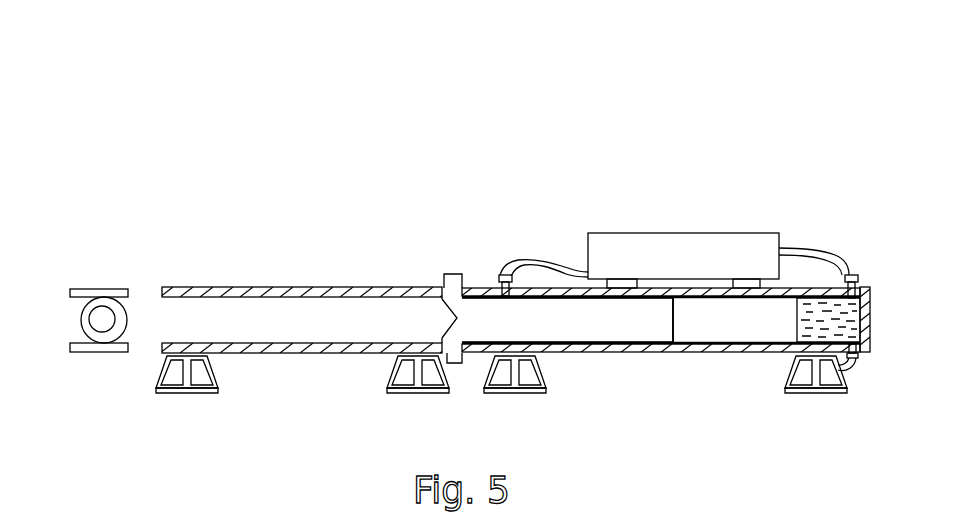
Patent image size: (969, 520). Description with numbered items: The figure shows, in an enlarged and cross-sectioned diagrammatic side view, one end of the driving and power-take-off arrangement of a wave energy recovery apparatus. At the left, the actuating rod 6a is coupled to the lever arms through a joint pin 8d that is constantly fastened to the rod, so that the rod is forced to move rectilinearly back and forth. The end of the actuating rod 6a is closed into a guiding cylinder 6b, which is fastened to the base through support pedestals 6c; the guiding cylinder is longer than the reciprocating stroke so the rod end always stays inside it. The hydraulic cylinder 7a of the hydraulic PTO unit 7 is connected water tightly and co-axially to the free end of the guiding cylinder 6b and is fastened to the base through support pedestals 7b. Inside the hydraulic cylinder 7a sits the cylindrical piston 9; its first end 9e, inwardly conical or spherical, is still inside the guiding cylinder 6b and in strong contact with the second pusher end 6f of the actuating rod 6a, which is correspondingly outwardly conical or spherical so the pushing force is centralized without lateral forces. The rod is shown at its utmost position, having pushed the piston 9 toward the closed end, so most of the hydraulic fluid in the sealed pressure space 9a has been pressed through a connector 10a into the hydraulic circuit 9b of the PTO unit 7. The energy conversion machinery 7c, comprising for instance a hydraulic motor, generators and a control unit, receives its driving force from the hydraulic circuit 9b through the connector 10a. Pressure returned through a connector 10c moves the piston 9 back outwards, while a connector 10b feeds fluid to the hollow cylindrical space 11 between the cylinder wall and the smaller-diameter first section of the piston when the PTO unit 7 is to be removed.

The actuating rod 6a is at (146, 297).
The guiding cylinder 6b is at (285, 292).
The support pedestal 6c is at (207, 377).
The second pusher end 6f is at (458, 312).
The PTO unit 7 is at (715, 110).
The hydraulic cylinder 7a is at (740, 352).
The support pedestal 7b is at (800, 395).
The energy conversion machinery 7c is at (660, 233).
The joint pin 8d is at (102, 326).
The piston 9 is at (683, 344).
The pressure space 9a is at (823, 300).
The hydraulic circuit 9b is at (527, 262).
The first end of the piston 9e is at (446, 332).
The connector 10a is at (862, 278).
The connector 10b is at (499, 280).
The connector 10c is at (853, 366).
The hollow cylindrical space 11 is at (585, 345).